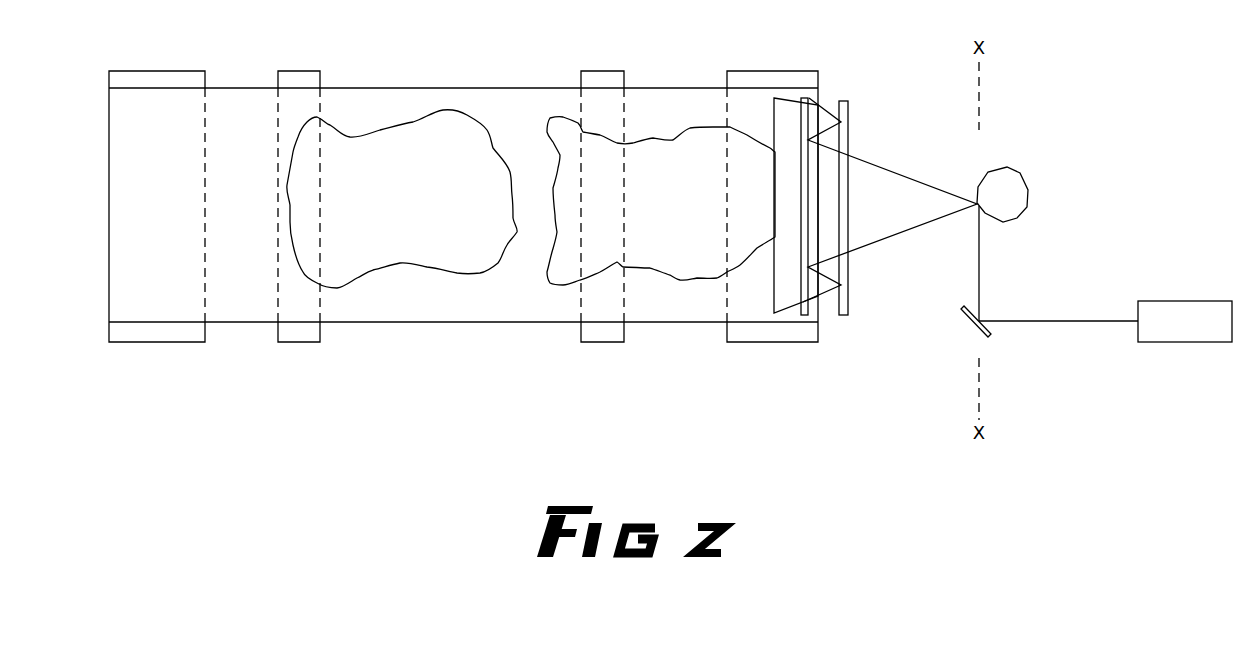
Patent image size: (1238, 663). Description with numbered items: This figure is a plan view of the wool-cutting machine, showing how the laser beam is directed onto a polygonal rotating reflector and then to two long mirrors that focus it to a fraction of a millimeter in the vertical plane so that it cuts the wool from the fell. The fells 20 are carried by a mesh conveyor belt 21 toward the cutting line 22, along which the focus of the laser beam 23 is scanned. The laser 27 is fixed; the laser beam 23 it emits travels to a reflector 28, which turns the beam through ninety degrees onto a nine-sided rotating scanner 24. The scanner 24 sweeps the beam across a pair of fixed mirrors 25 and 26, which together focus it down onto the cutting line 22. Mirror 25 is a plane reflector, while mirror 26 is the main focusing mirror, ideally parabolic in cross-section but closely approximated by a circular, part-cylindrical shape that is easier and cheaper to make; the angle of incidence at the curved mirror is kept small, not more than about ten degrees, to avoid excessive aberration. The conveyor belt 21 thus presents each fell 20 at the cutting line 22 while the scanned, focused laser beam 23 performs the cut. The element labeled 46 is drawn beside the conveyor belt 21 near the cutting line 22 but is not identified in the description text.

The fell 20 is at (419, 226).
The mesh conveyor belt 21 is at (526, 316).
The cutting line 22 is at (774, 105).
The laser beam 23 is at (912, 181).
The rotating scanner 24 is at (1030, 189).
The mirror 25 is at (809, 98).
The mirror 26 is at (848, 103).
The laser 27 is at (1172, 342).
The reflector 28 is at (960, 315).
The frame block 46 is at (758, 342).